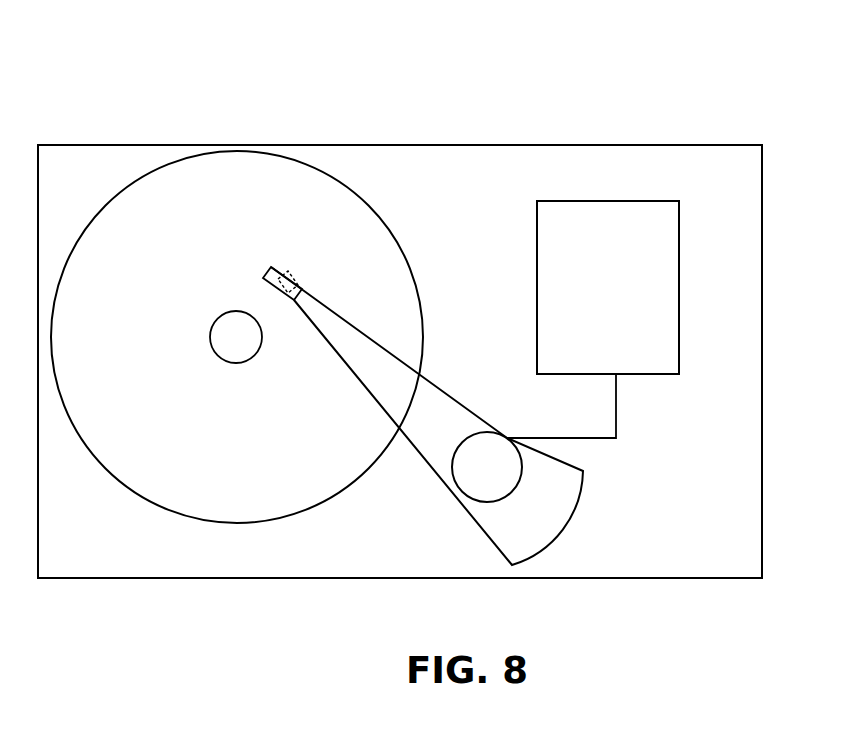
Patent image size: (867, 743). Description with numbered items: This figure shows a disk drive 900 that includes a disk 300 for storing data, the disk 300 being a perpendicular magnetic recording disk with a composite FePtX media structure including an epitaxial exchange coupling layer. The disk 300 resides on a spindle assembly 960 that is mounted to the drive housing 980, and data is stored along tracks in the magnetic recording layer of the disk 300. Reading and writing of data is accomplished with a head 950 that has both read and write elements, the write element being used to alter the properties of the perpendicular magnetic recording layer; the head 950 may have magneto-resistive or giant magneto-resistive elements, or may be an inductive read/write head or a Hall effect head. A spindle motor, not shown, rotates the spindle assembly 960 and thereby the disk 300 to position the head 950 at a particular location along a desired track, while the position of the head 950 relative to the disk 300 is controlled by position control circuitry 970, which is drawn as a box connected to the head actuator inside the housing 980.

The disk drive 900 is at (731, 84).
The drive housing 980 is at (479, 145).
The disk 300 is at (147, 501).
The spindle assembly 960 is at (222, 348).
The head 950 is at (283, 272).
The position control circuitry 970 is at (590, 327).